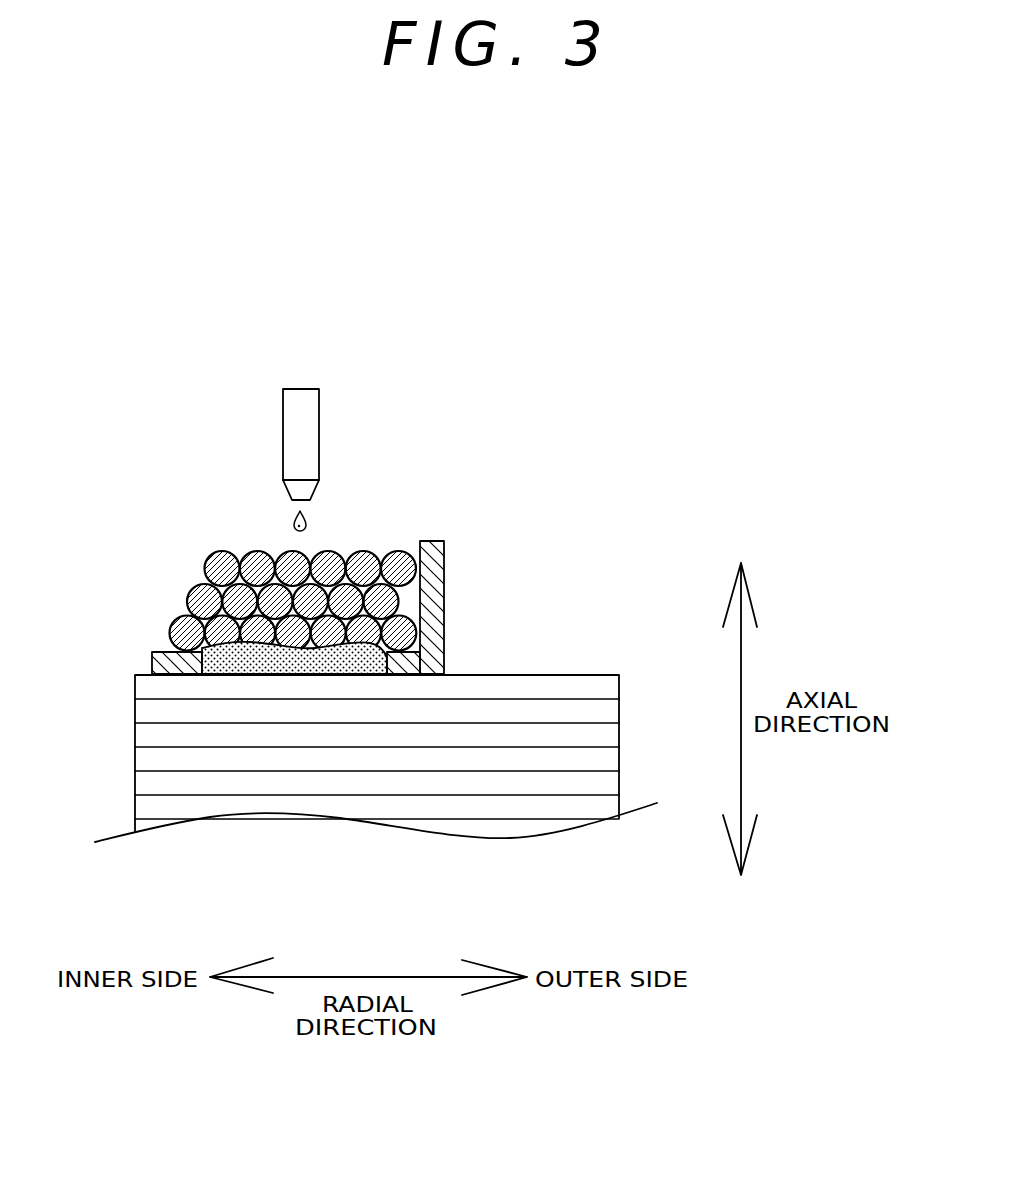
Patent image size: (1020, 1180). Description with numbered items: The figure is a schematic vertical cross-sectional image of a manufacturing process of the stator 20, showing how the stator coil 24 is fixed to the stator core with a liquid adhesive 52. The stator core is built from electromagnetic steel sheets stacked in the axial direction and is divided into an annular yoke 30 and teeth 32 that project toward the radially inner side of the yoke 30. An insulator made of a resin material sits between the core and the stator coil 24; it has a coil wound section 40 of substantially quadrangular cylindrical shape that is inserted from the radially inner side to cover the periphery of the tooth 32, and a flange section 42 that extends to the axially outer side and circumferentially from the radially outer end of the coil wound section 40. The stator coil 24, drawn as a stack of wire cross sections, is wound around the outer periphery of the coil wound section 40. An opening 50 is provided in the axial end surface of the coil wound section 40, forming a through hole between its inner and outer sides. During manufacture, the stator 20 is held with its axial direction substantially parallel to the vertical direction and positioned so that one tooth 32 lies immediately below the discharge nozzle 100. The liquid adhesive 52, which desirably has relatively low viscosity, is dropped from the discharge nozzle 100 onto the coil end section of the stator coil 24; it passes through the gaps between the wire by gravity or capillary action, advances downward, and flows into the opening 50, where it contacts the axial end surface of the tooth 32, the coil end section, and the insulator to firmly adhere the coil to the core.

The stator 20 is at (352, 589).
The stator coil 24 is at (230, 573).
The yoke 30 is at (376, 718).
The teeth 32 is at (273, 760).
The coil wound section 40 is at (388, 657).
The flange section 42 is at (445, 552).
The opening 50 is at (210, 670).
The liquid adhesive 52 is at (322, 660).
The discharge nozzle 100 is at (307, 427).